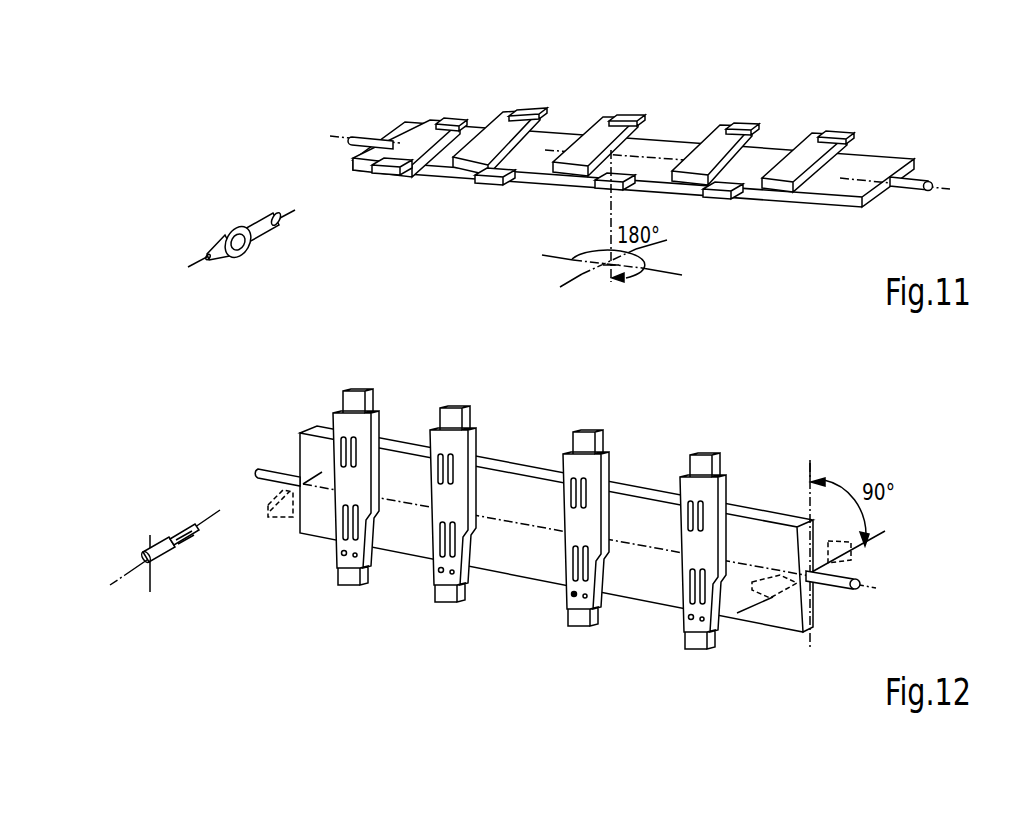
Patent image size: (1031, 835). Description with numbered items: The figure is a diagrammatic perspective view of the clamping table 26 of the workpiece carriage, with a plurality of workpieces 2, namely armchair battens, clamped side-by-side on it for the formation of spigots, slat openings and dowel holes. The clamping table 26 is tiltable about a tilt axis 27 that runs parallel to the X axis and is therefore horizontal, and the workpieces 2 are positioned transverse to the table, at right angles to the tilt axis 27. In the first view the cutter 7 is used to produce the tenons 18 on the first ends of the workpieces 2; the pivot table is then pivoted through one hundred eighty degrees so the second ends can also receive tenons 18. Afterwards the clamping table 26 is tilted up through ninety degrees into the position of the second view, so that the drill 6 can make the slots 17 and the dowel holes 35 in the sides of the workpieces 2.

In FIG. 11, the workpieces 2 is at (600, 127).
In FIG. 12, the workpieces 2 is at (358, 496).
In FIG. 12, the drill 6 is at (162, 545).
In FIG. 11, the cutter 7 is at (250, 248).
In FIG. 12, the slots 17 is at (567, 492).
In FIG. 11, the tenons 18 is at (388, 175).
In FIG. 11, the clamping table 26 is at (874, 162).
In FIG. 12, the clamping table 26 is at (783, 607).
In FIG. 11, the tilt axis 27 is at (925, 181).
In FIG. 12, the tilt axis 27 is at (857, 577).
In FIG. 12, the dowel holes 35 is at (573, 595).